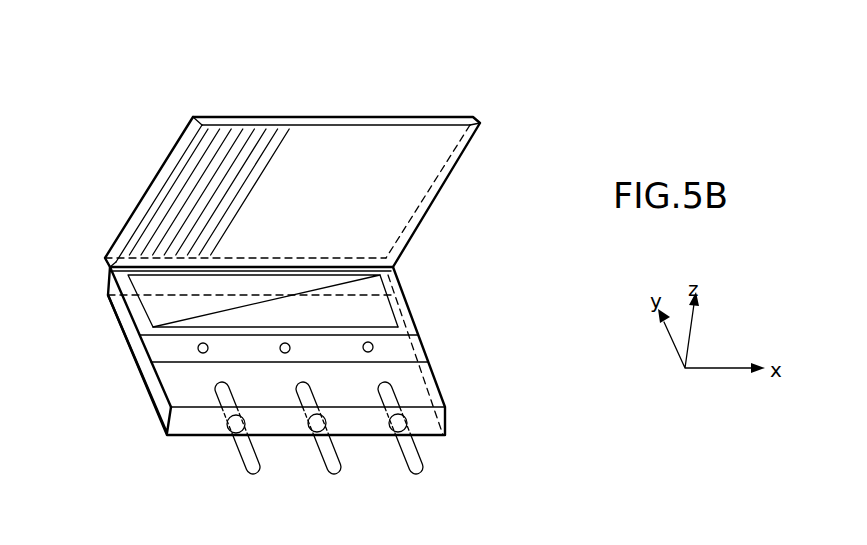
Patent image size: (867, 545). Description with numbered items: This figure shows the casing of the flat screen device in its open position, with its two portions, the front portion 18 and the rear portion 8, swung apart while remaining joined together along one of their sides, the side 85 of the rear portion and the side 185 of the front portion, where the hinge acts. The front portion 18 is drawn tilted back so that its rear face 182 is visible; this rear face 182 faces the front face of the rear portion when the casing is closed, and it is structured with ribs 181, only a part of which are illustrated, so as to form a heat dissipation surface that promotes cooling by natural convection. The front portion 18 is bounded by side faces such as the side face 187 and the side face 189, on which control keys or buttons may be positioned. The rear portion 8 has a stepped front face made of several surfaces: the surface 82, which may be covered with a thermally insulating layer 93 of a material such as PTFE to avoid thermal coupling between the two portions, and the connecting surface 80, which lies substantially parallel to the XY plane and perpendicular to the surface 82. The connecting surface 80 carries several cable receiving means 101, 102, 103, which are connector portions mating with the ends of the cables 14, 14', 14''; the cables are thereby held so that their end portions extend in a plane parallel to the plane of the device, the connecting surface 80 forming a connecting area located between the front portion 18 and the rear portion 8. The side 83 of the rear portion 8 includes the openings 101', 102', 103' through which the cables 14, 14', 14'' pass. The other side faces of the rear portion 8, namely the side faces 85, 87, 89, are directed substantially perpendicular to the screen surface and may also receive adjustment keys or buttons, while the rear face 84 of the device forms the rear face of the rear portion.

The front portion 18 is at (222, 94).
The side face of the front portion 189 is at (163, 176).
The ribs 181 is at (288, 131).
The side face of the rear portion 89 is at (412, 123).
The side face of the front portion 187 is at (468, 141).
The rear face of the front portion 182 is at (428, 152).
The side of the front portion 185 is at (373, 258).
The rear portion 8 is at (462, 292).
The front face surface of the rear portion 82 is at (134, 268).
The side face of the rear portion 85 is at (270, 285).
The thermally insulating layer 93 is at (385, 310).
The rear face 84 is at (116, 318).
The connecting surface 80 is at (148, 348).
The cable receiving means 101 is at (194, 326).
The cable receiving means 102 is at (275, 326).
The cable receiving means 103 is at (358, 325).
The side face of the rear portion 83 is at (178, 422).
The side face of the rear portion 87 is at (450, 418).
The cable 14 is at (187, 439).
The cable 14' is at (356, 445).
The cable 14'' is at (464, 420).
The opening 101' is at (228, 470).
The opening 102' is at (326, 470).
The opening 103' is at (448, 443).